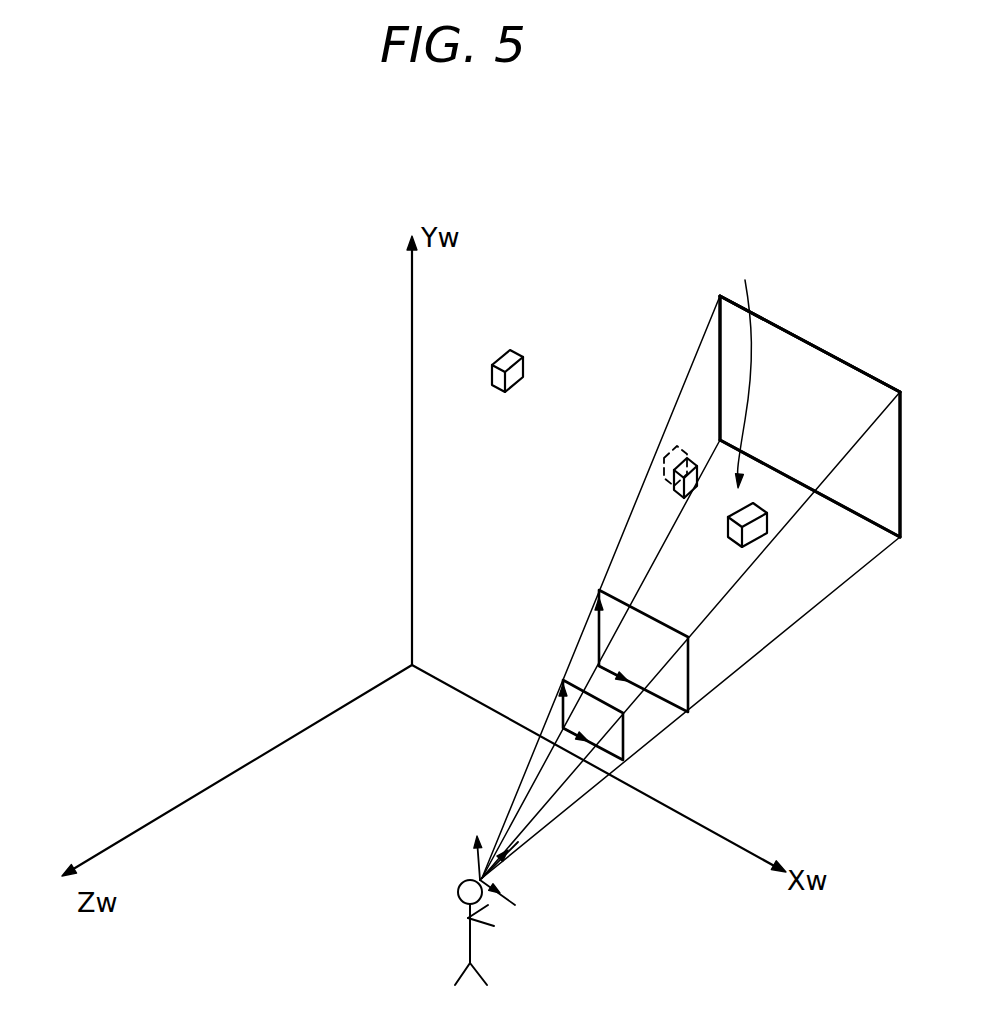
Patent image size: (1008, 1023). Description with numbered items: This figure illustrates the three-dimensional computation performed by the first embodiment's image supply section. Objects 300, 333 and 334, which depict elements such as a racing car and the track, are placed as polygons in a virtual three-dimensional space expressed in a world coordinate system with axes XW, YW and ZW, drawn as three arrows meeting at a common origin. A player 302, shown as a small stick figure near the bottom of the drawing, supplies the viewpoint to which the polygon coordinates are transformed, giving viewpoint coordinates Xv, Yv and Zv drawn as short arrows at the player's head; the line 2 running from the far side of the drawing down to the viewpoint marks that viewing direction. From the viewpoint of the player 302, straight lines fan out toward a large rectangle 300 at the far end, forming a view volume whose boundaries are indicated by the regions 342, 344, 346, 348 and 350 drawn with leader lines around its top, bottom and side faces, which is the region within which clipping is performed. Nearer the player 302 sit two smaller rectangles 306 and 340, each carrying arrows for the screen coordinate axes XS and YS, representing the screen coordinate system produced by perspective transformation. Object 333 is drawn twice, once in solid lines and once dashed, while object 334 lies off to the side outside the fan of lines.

The viewing direction / line of sight 2 is at (743, 367).
The object 300 is at (757, 553).
The player 302 is at (458, 902).
The projection plane (screen) 306 is at (688, 674).
The object 333 is at (675, 497).
The object 334 is at (498, 392).
The near plane (screen) 340 is at (612, 745).
The top plane of view volume 342 is at (808, 405).
The bottom plane of view volume 344 is at (823, 568).
The right side plane of view volume 346 is at (823, 520).
The left side plane of view volume 348 is at (701, 412).
The view volume (frustum) 350 is at (766, 372).